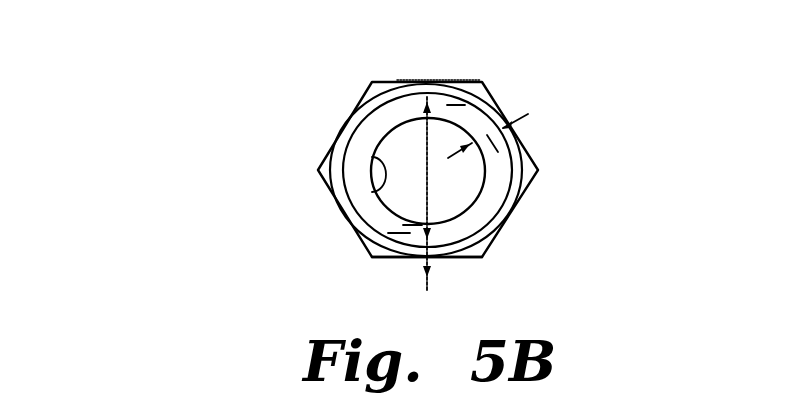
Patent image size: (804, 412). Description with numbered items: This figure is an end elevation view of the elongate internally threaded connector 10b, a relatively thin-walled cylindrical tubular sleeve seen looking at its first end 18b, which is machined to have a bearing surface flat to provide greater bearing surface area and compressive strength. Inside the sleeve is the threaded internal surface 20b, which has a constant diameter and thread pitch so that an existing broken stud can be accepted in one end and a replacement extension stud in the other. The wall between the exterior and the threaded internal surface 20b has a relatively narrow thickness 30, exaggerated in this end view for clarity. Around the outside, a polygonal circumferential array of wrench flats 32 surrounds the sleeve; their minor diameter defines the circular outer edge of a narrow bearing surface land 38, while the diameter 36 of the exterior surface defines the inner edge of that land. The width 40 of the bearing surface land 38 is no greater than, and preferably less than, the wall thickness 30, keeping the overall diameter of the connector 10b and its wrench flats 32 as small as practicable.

The connector 10b is at (202, 170).
The first end 18b is at (363, 133).
The threaded internal surface 20b is at (372, 157).
The wall thickness 30 is at (525, 150).
The wrench flats 32 is at (388, 80).
The diameter of the exterior surface 36 is at (429, 171).
The bearing surface land 38 is at (342, 203).
The width of the bearing surface land 40 is at (440, 253).